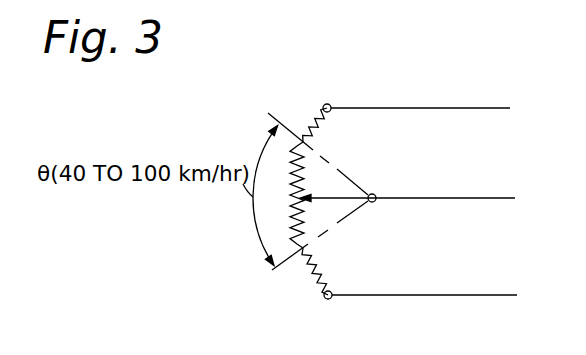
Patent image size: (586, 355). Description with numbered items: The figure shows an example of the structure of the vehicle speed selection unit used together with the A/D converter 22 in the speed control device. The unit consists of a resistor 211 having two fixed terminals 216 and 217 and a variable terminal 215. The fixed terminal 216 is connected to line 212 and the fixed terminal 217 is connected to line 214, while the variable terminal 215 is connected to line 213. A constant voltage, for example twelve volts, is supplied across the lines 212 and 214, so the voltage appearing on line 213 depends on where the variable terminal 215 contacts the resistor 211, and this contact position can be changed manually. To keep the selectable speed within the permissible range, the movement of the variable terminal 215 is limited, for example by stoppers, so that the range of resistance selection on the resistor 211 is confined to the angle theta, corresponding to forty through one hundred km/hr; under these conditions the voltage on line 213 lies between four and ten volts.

The A/D converter 22 is at (302, 112).
The resistor 211 is at (297, 268).
The line 212 is at (417, 109).
The line 213 is at (463, 197).
The line 214 is at (432, 296).
The variable terminal 215 is at (372, 203).
The fixed terminal 216 is at (327, 104).
The fixed terminal 217 is at (328, 300).